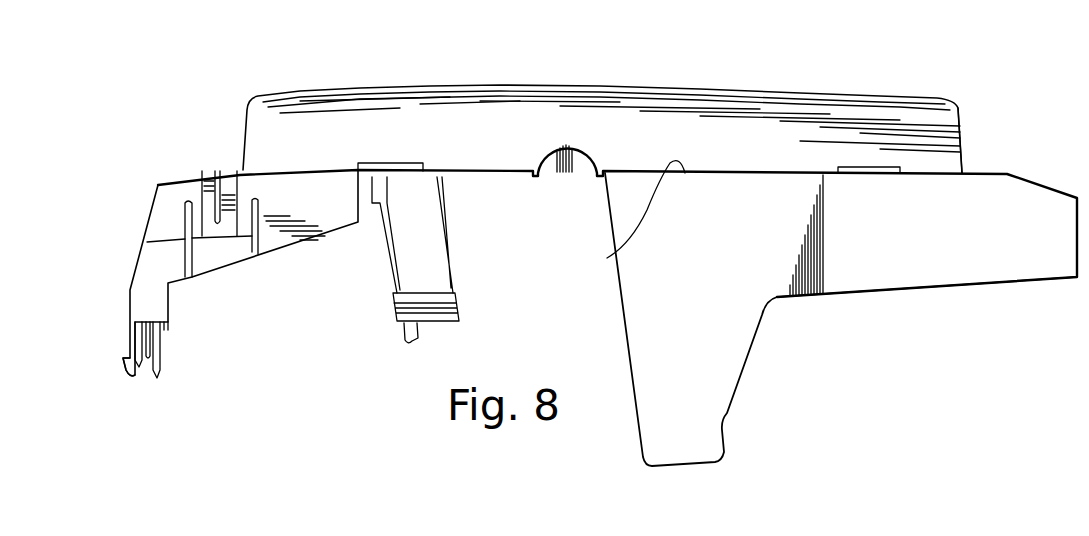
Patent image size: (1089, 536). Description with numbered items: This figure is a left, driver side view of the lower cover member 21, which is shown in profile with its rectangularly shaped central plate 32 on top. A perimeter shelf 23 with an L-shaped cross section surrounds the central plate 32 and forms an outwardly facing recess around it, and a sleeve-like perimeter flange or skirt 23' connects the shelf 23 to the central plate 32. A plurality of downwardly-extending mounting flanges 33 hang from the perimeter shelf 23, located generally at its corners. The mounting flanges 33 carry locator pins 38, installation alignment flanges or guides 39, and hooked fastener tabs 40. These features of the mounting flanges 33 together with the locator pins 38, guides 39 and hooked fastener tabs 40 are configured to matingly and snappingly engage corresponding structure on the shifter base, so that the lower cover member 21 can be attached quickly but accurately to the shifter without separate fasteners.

The lower cover member 21 is at (868, 79).
The central plate 32 is at (540, 85).
The perimeter flange or skirt 23' is at (981, 139).
The perimeter shelf 23 is at (696, 313).
The mounting flanges 33 is at (190, 277).
The locator pins 38 is at (143, 363).
The installation alignment flanges or guides 39 is at (163, 363).
The hooked fastener tabs 40 is at (128, 373).